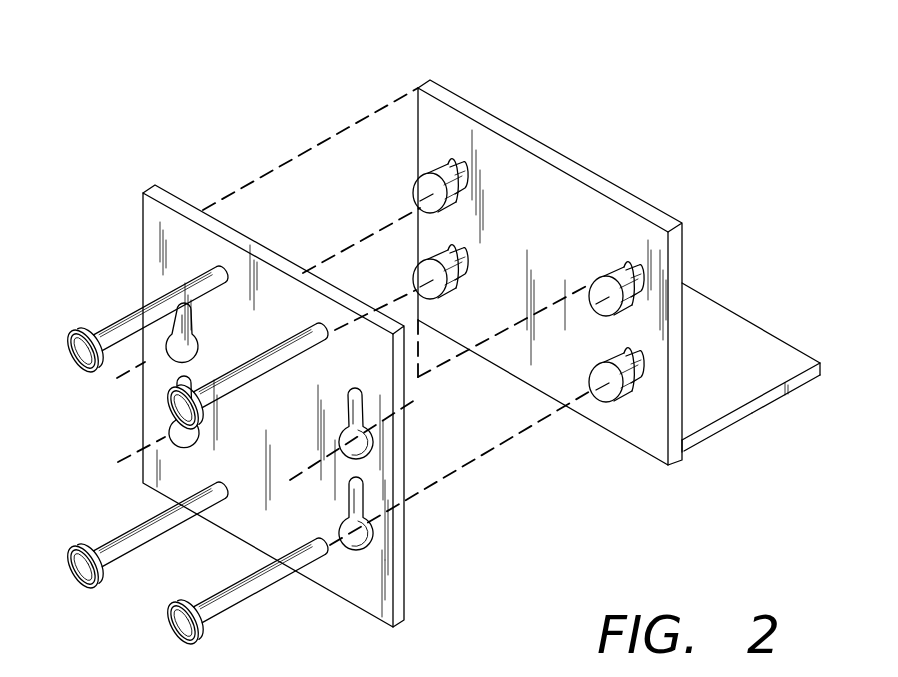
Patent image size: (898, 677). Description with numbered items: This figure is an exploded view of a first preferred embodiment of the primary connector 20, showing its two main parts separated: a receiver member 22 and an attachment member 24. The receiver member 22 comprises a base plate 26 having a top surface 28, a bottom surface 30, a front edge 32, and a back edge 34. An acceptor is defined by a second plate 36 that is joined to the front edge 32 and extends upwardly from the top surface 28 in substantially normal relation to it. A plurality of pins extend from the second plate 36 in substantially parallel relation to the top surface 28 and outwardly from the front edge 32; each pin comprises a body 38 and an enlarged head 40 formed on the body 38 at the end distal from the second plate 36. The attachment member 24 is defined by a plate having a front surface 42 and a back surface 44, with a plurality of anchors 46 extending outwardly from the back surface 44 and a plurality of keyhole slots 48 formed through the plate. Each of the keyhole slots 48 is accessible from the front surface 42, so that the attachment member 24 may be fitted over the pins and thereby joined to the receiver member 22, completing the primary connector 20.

The primary connector 20 is at (198, 95).
The receiver member 22 is at (705, 165).
The attachment member 24 is at (117, 190).
The base plate 26 is at (770, 398).
The top surface 28 is at (740, 340).
The bottom surface 30 is at (735, 432).
The front edge 32 is at (683, 450).
The back edge 34 is at (820, 363).
The second plate 36 is at (530, 178).
The body 38 is at (460, 165).
The enlarged head 40 is at (428, 258).
The front surface 42 is at (500, 0).
The back surface 44 is at (157, 377).
The anchors 46 is at (113, 332).
The keyhole slots 48 is at (47, 450).